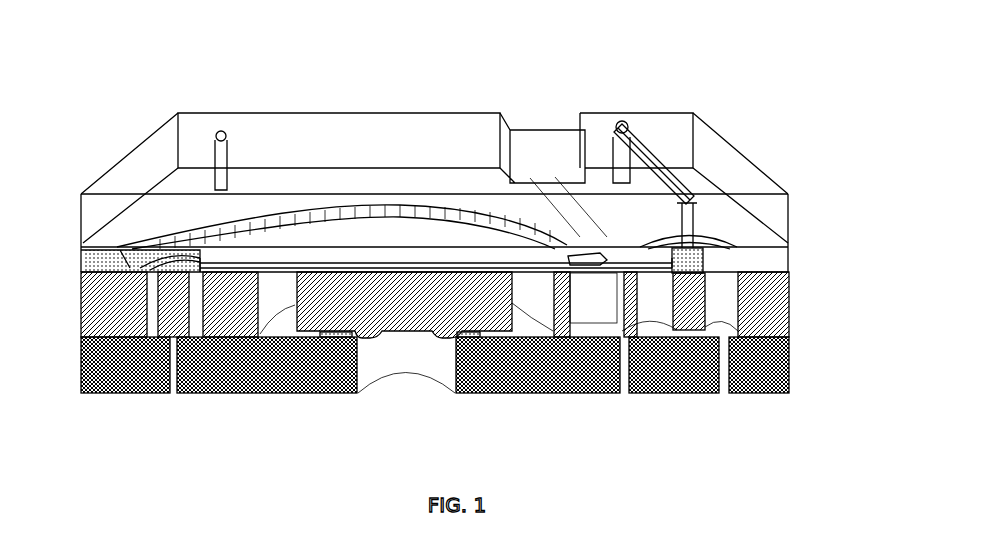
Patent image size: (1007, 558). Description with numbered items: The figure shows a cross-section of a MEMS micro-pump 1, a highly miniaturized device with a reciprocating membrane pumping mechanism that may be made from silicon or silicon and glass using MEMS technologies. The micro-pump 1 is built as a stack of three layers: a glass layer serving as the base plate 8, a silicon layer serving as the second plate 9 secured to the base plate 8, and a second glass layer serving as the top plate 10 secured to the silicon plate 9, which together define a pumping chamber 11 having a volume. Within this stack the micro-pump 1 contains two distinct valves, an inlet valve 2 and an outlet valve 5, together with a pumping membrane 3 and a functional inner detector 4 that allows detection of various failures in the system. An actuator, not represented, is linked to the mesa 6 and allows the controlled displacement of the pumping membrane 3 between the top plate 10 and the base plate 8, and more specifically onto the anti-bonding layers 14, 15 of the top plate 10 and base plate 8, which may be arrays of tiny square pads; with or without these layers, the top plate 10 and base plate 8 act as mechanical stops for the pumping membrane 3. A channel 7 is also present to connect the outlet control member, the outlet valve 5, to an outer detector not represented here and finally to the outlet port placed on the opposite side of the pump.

The MEMS micro-pump 1 is at (745, 38).
The inlet valve 2 is at (173, 297).
The pumping membrane 3 is at (288, 263).
The functional inner detector 4 is at (592, 268).
The outlet valve 5 is at (703, 258).
The mesa 6 is at (365, 298).
The channel 7 is at (640, 152).
The base plate 8 is at (752, 370).
The second plate 9 is at (752, 310).
The top plate 10 is at (752, 221).
The pumping chamber 11 is at (370, 257).
The anti-bonding layer 14 is at (432, 247).
The anti-bonding layer 15 is at (327, 338).